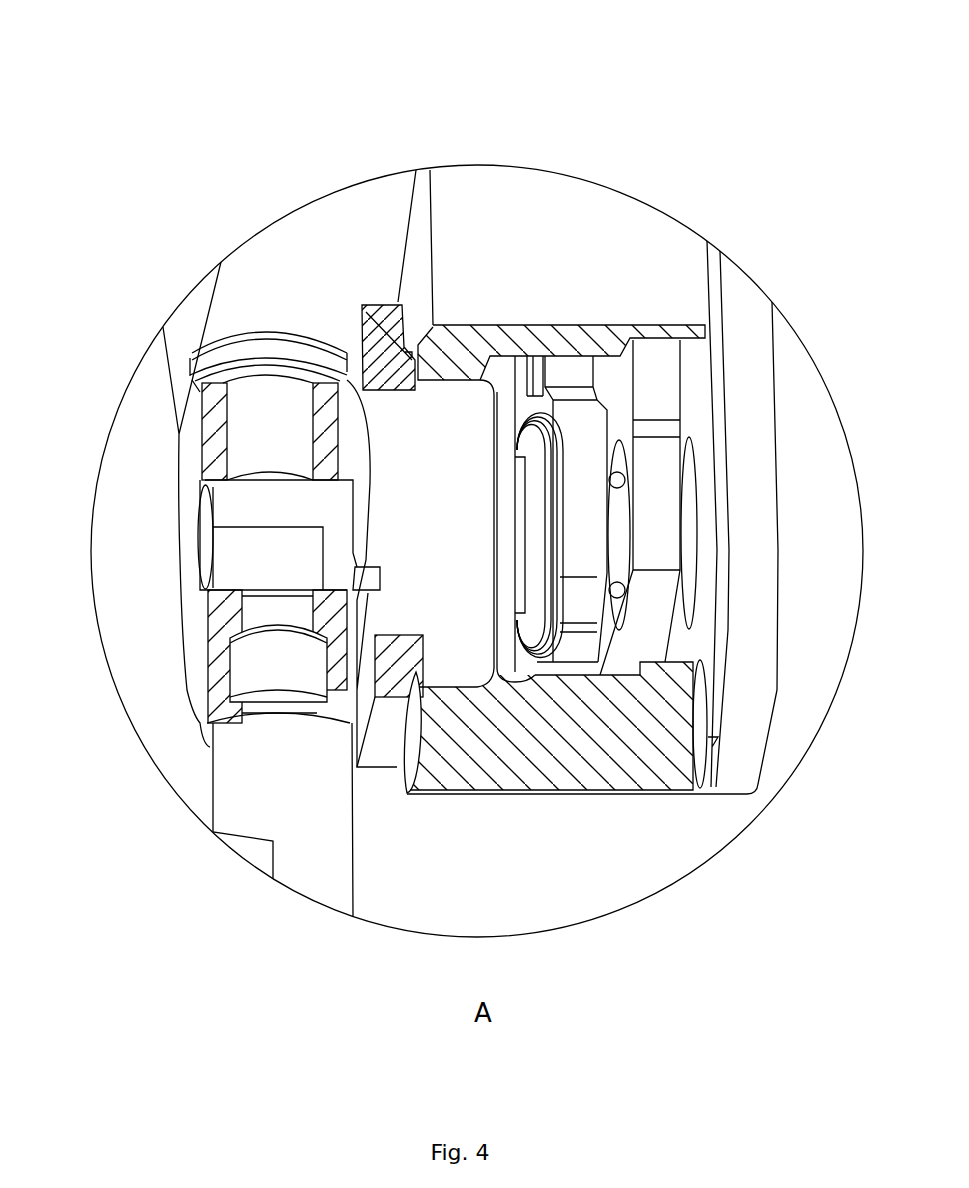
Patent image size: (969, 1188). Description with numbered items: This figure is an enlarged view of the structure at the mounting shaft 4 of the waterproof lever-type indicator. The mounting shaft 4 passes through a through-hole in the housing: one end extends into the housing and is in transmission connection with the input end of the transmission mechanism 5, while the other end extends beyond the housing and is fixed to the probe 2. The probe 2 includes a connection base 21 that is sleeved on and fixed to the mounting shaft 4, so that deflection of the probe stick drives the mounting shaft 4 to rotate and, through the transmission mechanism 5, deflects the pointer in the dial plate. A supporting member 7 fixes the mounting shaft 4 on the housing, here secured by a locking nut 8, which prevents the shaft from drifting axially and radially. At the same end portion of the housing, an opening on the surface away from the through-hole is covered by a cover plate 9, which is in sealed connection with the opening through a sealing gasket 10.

The probe 2 is at (278, 755).
The mounting shaft 4 is at (270, 552).
The transmission mechanism 5 is at (665, 377).
The supporting member 7 is at (432, 592).
The locking nut 8 is at (360, 308).
The cover plate 9 is at (752, 598).
The sealing gasket 10 is at (722, 665).
The connection base 21 is at (197, 460).